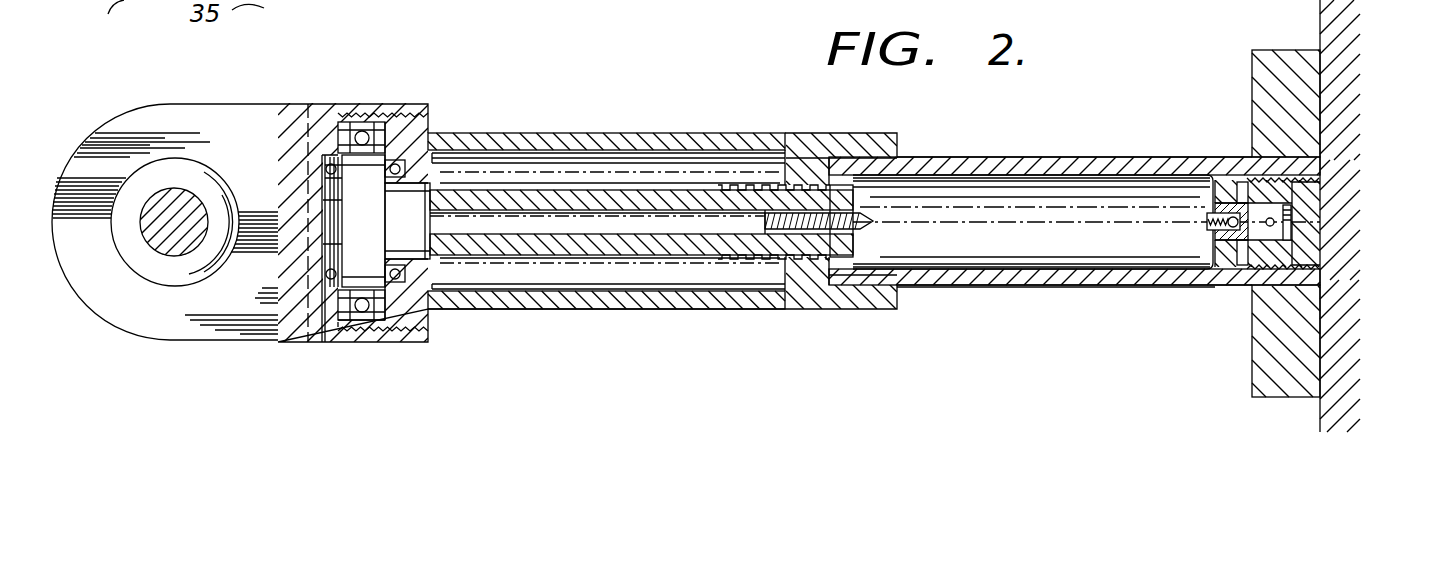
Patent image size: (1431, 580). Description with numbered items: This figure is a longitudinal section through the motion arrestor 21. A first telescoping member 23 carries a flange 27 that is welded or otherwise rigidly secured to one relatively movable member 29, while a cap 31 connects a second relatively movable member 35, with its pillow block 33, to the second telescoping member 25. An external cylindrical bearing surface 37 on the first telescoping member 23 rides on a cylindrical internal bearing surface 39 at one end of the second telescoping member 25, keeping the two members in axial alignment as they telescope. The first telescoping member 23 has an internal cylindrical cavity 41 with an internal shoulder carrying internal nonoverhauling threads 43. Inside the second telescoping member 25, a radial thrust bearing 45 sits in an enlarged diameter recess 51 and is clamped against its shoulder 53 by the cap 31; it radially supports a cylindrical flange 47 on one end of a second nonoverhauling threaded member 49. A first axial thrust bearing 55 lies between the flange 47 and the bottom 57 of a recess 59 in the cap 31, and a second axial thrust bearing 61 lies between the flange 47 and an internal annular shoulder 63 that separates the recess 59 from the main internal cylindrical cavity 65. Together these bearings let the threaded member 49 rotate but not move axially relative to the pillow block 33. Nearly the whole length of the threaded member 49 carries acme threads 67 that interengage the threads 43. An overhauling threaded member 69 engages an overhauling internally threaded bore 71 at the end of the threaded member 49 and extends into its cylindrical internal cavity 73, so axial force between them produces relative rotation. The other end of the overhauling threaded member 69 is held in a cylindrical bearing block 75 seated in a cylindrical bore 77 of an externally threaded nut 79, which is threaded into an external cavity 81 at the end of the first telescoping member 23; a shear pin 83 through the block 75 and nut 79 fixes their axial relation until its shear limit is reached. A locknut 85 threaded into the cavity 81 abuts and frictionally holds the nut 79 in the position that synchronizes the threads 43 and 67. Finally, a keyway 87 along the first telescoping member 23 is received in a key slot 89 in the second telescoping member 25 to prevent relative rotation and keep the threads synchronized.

The motion arrestor 21 is at (614, 96).
The first telescoping member 23 is at (1033, 160).
The second telescoping member 25 is at (719, 133).
The flange 27 is at (1264, 98).
The relatively movable member 29 is at (1320, 17).
The cap 31 is at (333, 103).
The pillow block 33 is at (174, 115).
The second relatively movable member 35 is at (162, 238).
The external cylindrical bearing surface 37 is at (882, 158).
The cylindrical internal bearing surface 39 is at (828, 162).
The internal cylindrical cavity 41 is at (1033, 262).
The internal nonoverhauling threads 43 is at (848, 248).
The radial thrust bearing 45 is at (366, 134).
The cylindrical flange 47 is at (343, 219).
The second nonoverhauling threaded member 49 is at (503, 247).
The enlarged diameter recess 51 is at (331, 328).
The shoulder 53 is at (372, 317).
The first axial thrust bearing 55 is at (330, 274).
The bottom of recess 57 is at (330, 238).
The recess 59 is at (331, 205).
The second axial thrust bearing 61 is at (402, 272).
The internal annular shoulder 63 is at (436, 160).
The main internal cylindrical cavity 65 is at (637, 291).
The acme threads 67 is at (760, 255).
The overhauling threaded member 69 is at (1063, 233).
The overhauling internally threaded bore 71 is at (853, 218).
The cylindrical internal cavity 73 is at (587, 228).
The cylindrical bearing block 75 is at (1220, 213).
The cylindrical bore 77 is at (1293, 237).
The externally threaded nut 79 is at (1268, 186).
The external cavity 81 is at (1253, 250).
The shear pin 83 is at (1275, 222).
The locknut 85 is at (1315, 190).
The keyway 87 is at (922, 285).
The key slot 89 is at (831, 278).